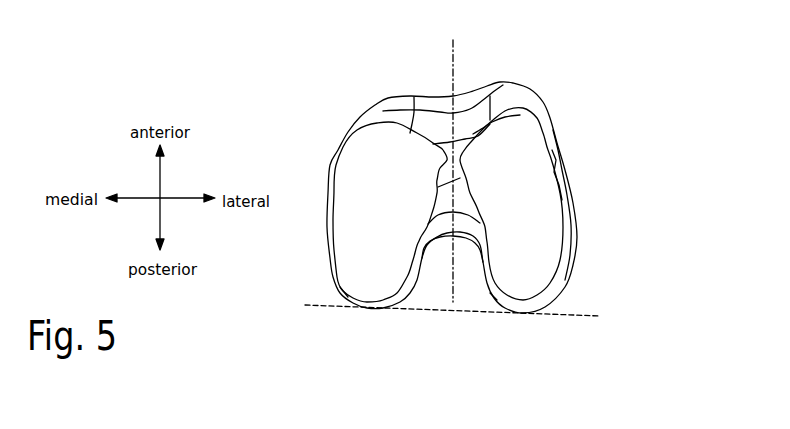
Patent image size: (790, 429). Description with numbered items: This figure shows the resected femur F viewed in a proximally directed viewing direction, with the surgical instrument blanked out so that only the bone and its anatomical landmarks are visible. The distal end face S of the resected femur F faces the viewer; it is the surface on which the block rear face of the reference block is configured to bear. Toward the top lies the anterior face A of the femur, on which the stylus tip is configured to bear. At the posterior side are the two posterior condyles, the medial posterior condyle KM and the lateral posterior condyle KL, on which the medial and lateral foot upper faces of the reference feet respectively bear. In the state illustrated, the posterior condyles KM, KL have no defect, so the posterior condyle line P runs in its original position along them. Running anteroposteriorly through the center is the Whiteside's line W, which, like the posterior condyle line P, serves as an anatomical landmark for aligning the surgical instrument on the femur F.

The resected femur F is at (597, 64).
The anterior face of the femur A is at (431, 97).
The Whiteside's line W is at (455, 50).
The distal end face S is at (543, 180).
The lateral posterior condyle KL is at (560, 257).
The medial posterior condyle KM is at (343, 259).
The posterior condyle line P is at (567, 313).